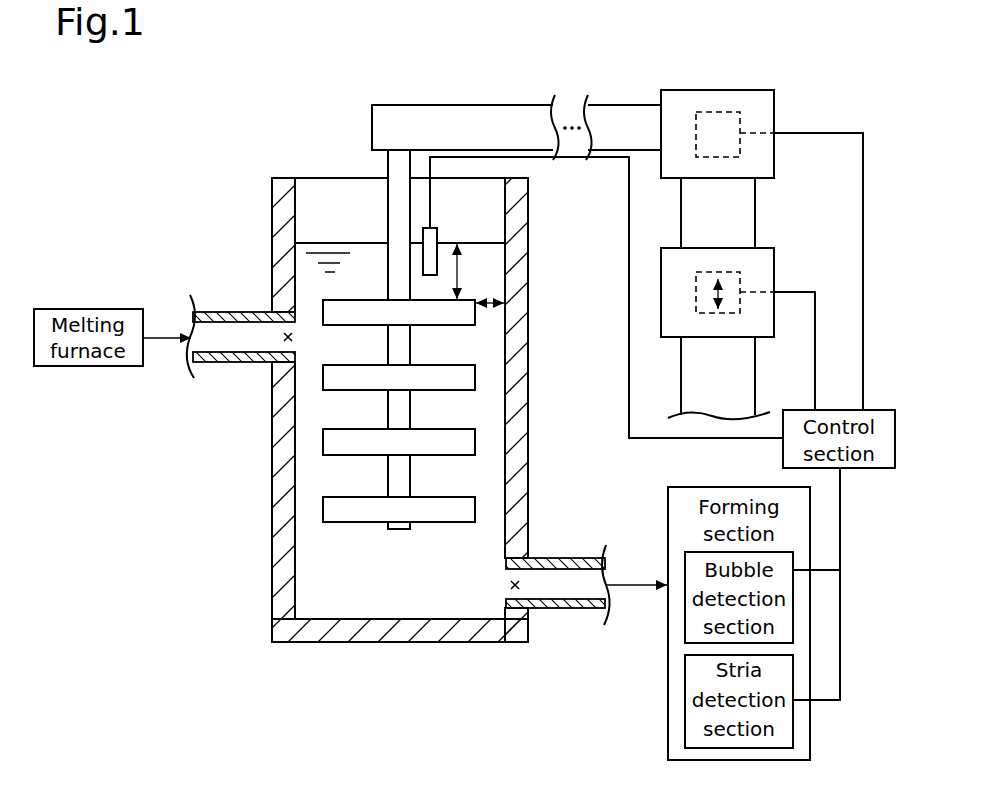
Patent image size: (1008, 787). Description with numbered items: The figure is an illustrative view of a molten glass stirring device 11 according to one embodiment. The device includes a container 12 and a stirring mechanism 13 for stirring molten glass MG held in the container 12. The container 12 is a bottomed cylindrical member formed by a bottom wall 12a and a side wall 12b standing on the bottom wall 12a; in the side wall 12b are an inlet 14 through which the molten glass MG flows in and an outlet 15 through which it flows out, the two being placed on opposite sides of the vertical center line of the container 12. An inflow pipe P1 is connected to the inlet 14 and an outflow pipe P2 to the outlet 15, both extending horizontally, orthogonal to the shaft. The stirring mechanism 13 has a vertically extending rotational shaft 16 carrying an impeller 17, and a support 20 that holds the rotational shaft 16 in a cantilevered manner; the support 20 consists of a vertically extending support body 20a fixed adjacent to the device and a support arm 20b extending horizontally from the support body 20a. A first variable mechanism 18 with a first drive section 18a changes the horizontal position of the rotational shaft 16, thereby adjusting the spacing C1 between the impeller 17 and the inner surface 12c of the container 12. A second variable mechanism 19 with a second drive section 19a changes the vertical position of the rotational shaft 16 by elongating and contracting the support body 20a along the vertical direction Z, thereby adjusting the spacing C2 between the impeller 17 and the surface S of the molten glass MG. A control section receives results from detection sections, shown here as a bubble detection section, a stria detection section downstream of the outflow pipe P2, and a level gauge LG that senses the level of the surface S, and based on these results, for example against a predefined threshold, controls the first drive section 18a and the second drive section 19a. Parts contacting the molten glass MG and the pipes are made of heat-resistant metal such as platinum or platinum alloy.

The molten glass stirring device 11 is at (218, 142).
The container 12 is at (271, 177).
The bottom wall 12a is at (338, 643).
The side wall 12b is at (272, 462).
The inner surface 12c is at (505, 414).
The stirring mechanism 13 is at (384, 102).
The inlet 14 is at (287, 335).
The outlet 15 is at (520, 588).
The rotational shaft 16 is at (388, 163).
The impeller 17 is at (477, 381).
The first variable mechanism 18 is at (776, 90).
The first drive section 18a is at (740, 112).
The second variable mechanism 19 is at (776, 250).
The second drive section 19a is at (740, 272).
The support 20 is at (622, 104).
The support body 20a is at (755, 388).
The support arm 20b is at (493, 104).
The molten glass MG is at (318, 250).
The level gauge LG is at (438, 232).
The surface of the molten glass S is at (493, 243).
The spacing C1 is at (488, 300).
The spacing C2 is at (460, 270).
The vertical direction Z is at (713, 315).
The inflow pipe P1 is at (230, 363).
The outflow pipe P2 is at (566, 557).